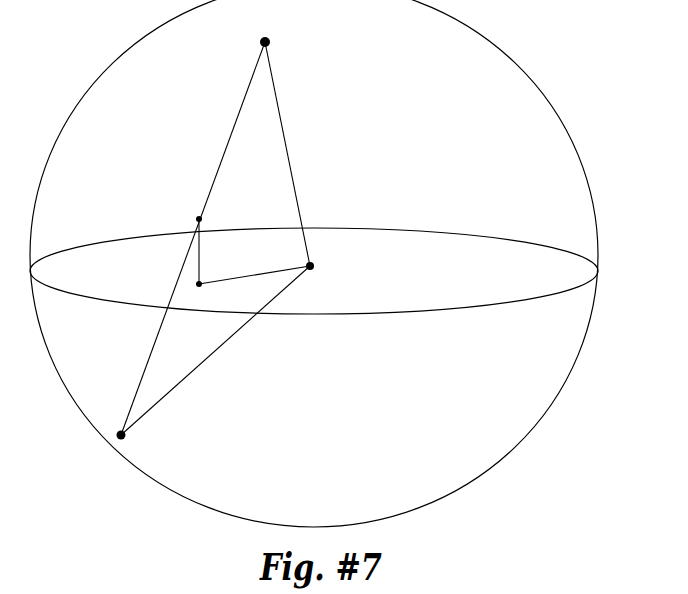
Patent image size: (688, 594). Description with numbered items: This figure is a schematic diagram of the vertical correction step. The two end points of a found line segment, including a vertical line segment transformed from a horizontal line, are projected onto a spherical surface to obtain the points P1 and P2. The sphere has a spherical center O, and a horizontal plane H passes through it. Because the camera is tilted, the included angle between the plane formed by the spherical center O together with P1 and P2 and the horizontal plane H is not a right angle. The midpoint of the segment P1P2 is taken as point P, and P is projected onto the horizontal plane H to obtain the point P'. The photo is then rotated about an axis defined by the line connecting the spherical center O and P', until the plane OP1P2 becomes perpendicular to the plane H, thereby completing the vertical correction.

The first projected end point P1 is at (215, 235).
The midpoint of P1P2 P is at (208, 248).
The projection of midpoint P onto horizontal plane P' is at (253, 275).
The spherical center O is at (227, 348).
The horizontal plane H is at (314, 271).
The second projected end point P2 is at (139, 440).